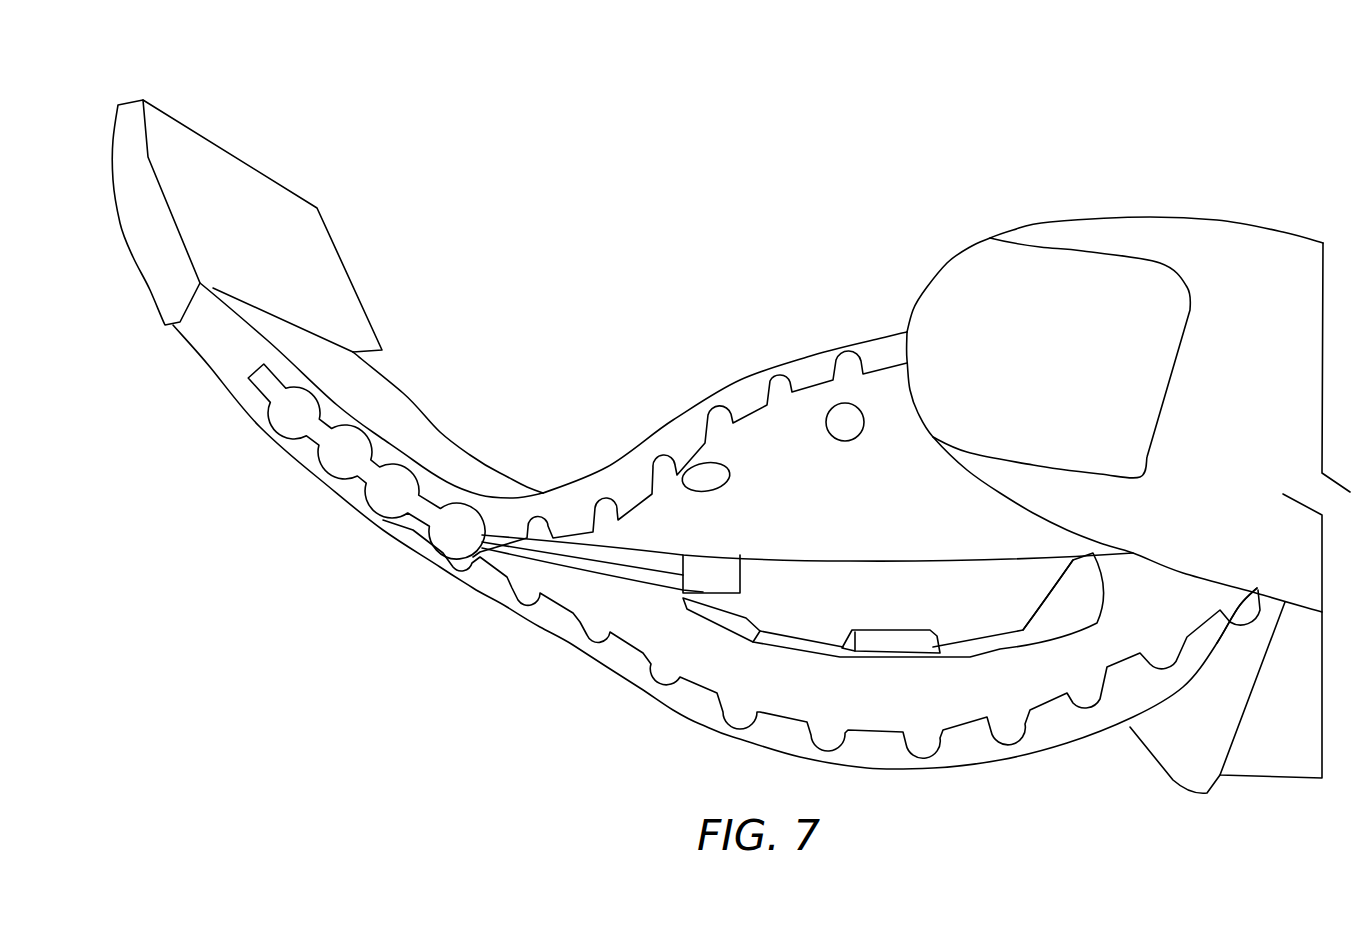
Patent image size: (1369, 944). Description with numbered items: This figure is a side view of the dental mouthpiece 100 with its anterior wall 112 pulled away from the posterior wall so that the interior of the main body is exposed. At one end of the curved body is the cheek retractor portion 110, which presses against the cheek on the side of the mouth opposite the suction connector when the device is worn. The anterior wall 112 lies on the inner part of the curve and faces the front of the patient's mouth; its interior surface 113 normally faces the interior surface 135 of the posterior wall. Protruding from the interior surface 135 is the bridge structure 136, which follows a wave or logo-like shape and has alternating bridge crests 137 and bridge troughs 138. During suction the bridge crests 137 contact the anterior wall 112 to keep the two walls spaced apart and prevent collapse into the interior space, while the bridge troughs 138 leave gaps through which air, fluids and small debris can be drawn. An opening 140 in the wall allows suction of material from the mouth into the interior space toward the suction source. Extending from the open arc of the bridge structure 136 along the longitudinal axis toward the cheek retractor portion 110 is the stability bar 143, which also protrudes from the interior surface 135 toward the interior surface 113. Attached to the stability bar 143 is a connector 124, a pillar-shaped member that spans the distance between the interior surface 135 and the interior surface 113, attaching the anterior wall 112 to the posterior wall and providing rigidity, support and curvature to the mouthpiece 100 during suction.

The dental mouthpiece 100 is at (1163, 90).
The cheek retractor portion 110 is at (227, 212).
The anterior wall 112 is at (397, 437).
The interior surface of the anterior wall 113 is at (768, 463).
The connector 124 is at (713, 568).
The interior surface of the posterior wall 135 is at (773, 670).
The bridge structure 136 is at (1042, 630).
The bridge crest 137 is at (890, 640).
The bridge trough 138 is at (795, 642).
The opening 140 is at (847, 414).
The stability bar 143 is at (580, 562).